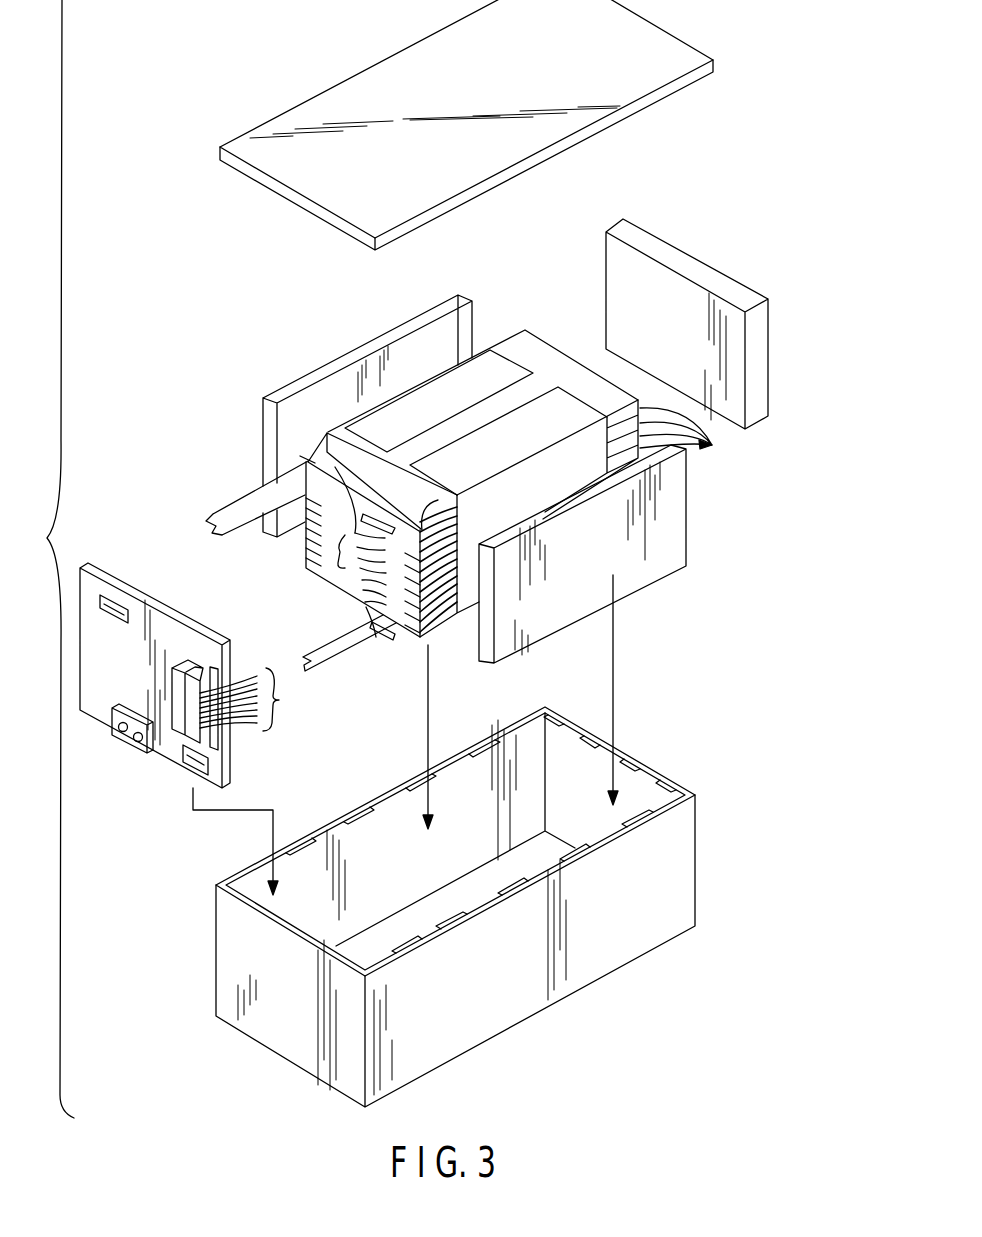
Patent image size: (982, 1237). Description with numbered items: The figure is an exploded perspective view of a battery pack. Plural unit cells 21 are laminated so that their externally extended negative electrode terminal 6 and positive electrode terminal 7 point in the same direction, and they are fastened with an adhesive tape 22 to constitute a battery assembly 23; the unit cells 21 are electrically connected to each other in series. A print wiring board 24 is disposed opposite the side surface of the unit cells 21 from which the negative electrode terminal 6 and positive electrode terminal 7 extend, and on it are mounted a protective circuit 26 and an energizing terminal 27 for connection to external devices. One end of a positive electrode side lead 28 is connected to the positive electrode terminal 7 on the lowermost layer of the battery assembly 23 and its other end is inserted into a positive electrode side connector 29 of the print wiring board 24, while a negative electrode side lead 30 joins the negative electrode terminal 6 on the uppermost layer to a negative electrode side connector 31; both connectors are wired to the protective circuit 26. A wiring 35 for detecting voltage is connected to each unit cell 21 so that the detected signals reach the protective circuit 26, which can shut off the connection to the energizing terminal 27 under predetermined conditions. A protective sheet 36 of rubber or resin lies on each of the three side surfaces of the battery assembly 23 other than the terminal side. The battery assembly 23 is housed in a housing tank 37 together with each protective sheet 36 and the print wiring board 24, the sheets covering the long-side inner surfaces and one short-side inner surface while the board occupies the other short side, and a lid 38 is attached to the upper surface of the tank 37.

The lid 38 is at (652, 48).
The battery assembly 23 is at (413, 394).
The adhesive tape 22 is at (544, 413).
The protective sheet 36 is at (337, 373).
The negative electrode terminal 6 is at (308, 461).
The negative electrode side lead 30 is at (245, 506).
The unit cell 21 is at (690, 434).
The positive electrode terminal 7 is at (392, 522).
The print wiring board 24 is at (115, 570).
The negative electrode side connector 31 is at (123, 605).
The protective circuit 26 is at (185, 667).
The wiring for detecting voltage 35 is at (340, 566).
The positive electrode side connector 29 is at (212, 767).
The energizing terminal 27 is at (138, 745).
The positive electrode side lead 28 is at (346, 666).
The housing tank 37 is at (684, 870).